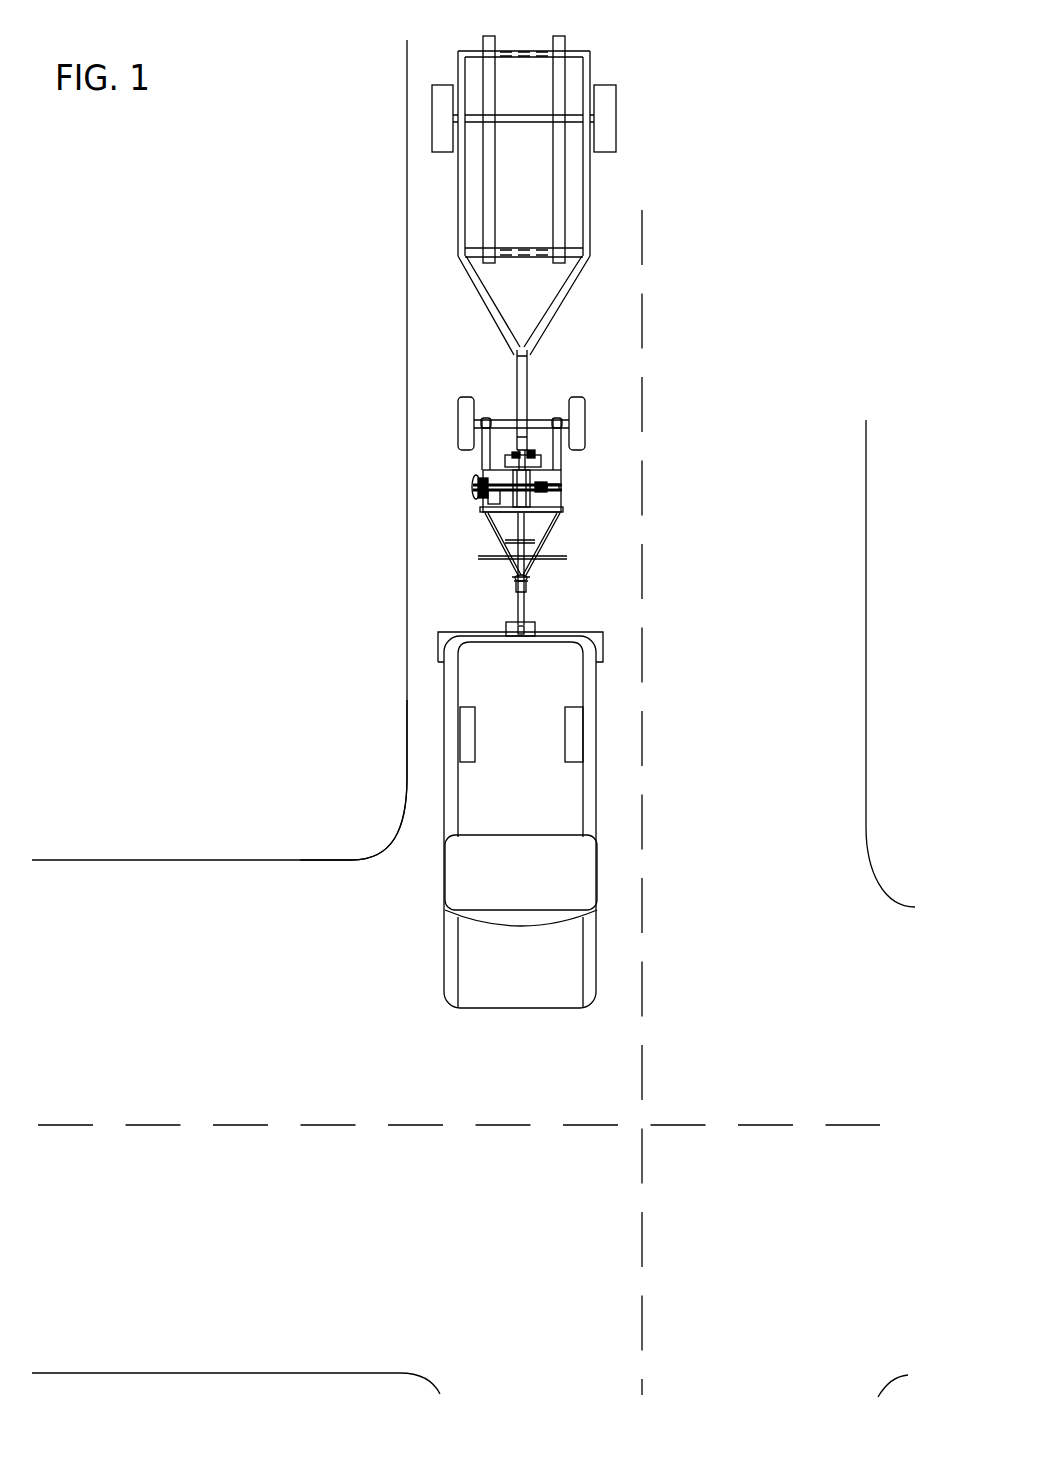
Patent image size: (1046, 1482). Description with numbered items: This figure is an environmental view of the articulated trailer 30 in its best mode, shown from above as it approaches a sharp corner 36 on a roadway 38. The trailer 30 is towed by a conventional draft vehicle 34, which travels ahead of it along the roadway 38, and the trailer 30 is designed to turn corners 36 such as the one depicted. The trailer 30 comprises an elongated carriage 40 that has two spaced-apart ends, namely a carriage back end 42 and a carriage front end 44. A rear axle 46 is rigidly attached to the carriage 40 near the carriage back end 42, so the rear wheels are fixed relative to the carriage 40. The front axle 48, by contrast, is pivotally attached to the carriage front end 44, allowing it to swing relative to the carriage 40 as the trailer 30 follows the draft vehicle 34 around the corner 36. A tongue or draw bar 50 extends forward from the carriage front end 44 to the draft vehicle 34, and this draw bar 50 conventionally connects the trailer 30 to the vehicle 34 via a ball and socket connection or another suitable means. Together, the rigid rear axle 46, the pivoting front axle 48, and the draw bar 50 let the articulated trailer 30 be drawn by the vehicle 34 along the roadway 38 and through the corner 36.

The articulated trailer 30 is at (679, 105).
The draft vehicle 34 is at (613, 705).
The corner 36 is at (370, 830).
The roadway 38 is at (207, 916).
The elongated carriage 40 is at (437, 256).
The carriage back end 42 is at (435, 55).
The carriage front end 44 is at (450, 487).
The rear axle 46 is at (422, 119).
The front axle 48 is at (600, 410).
The draw bar 50 is at (546, 582).